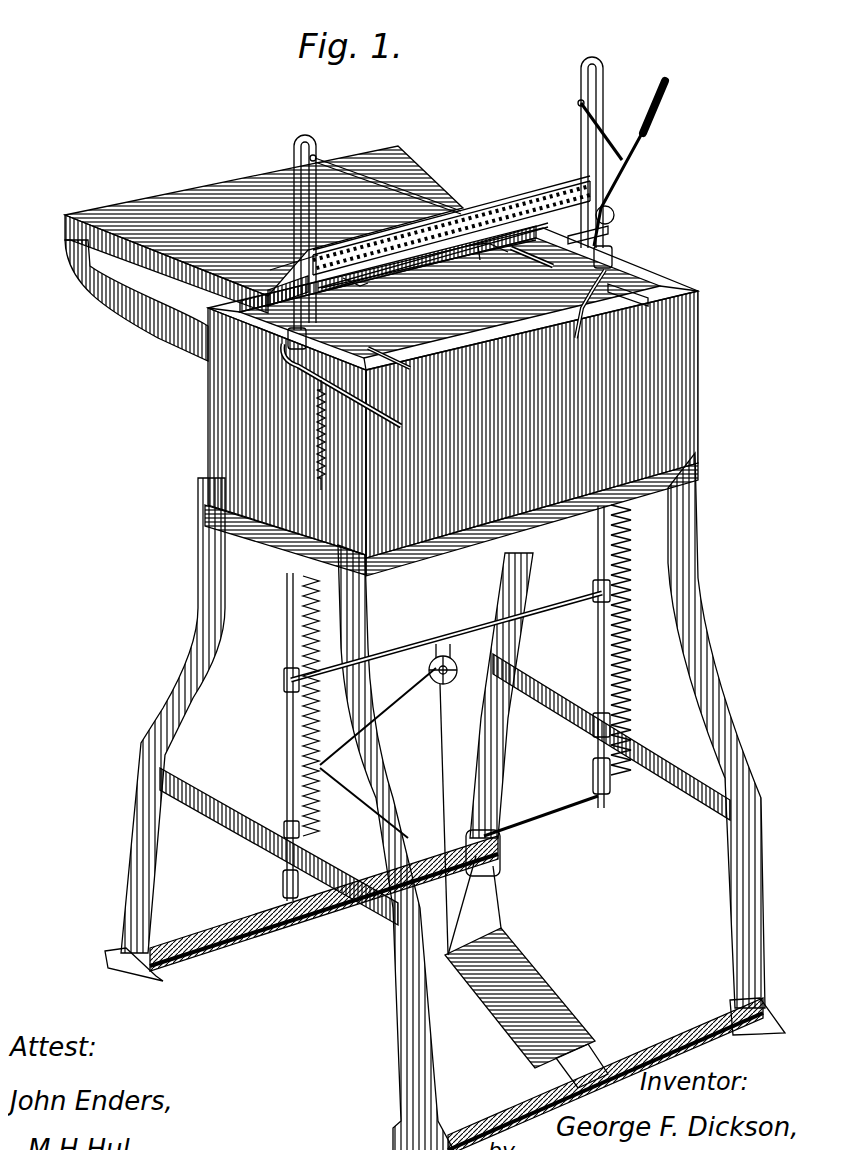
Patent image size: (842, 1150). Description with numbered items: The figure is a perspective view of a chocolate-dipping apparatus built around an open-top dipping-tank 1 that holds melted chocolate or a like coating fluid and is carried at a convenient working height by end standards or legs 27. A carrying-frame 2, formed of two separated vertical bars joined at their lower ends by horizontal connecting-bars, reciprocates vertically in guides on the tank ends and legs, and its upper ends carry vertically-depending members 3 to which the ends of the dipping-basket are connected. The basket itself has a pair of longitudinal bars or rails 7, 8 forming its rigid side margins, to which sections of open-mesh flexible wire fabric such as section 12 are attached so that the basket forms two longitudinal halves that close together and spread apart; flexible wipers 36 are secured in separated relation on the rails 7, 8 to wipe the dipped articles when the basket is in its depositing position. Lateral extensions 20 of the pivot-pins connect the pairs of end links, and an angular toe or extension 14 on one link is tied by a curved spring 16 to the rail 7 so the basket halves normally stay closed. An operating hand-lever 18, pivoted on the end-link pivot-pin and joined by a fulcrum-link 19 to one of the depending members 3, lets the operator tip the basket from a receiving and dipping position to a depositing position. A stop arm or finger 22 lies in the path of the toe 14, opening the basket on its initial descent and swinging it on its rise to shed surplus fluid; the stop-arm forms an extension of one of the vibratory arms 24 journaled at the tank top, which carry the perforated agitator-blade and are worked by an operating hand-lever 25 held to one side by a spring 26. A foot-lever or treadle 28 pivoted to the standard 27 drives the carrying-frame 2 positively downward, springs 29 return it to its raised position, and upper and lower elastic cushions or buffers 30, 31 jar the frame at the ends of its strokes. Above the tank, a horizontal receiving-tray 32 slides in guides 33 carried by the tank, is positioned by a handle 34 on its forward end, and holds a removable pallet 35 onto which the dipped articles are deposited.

The dipping-tank 1 is at (451, 401).
The carrying-frame 2 is at (287, 214).
The vertically-depending members 3 is at (308, 196).
The longitudinal bar or rail 7 is at (480, 197).
The longitudinal bar or rail 8 is at (522, 188).
The section of open-mesh flexible wire fabric 12 is at (428, 264).
The angular toe or extension 14 is at (285, 280).
The curved spring 16 is at (607, 208).
The operating hand-lever 18 is at (629, 163).
The fulcrum-link 19 is at (598, 120).
The lateral extensions of the pivot-pins 20 is at (290, 260).
The stop arm or finger 22 is at (301, 326).
The vibratory arms 24 is at (612, 272).
The operating hand-lever 25 is at (309, 434).
The spring 26 is at (310, 440).
The end standards or legs 27 is at (722, 832).
The foot-lever or treadle 28 is at (449, 840).
The springs 29 is at (624, 652).
The upper elastic cushion or buffer 30 is at (278, 818).
The lower elastic cushion or buffer 31 is at (276, 875).
The horizontal receiving-tray 32 is at (150, 203).
The guides 33 is at (515, 248).
The handle 34 is at (470, 246).
The removable pallet 35 is at (264, 229).
The flexible wipers 36 is at (372, 238).